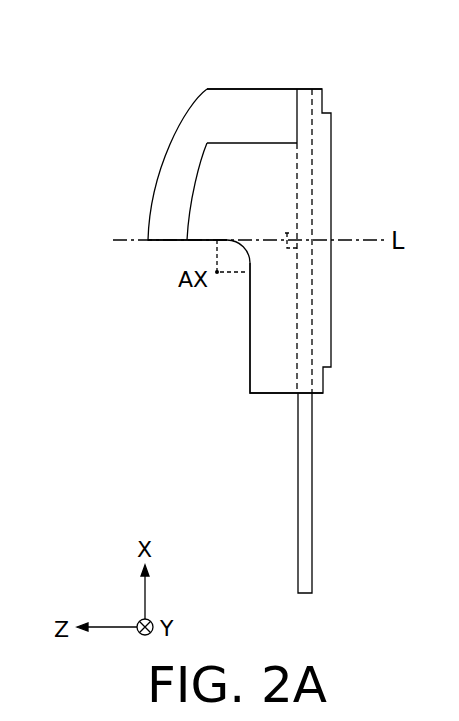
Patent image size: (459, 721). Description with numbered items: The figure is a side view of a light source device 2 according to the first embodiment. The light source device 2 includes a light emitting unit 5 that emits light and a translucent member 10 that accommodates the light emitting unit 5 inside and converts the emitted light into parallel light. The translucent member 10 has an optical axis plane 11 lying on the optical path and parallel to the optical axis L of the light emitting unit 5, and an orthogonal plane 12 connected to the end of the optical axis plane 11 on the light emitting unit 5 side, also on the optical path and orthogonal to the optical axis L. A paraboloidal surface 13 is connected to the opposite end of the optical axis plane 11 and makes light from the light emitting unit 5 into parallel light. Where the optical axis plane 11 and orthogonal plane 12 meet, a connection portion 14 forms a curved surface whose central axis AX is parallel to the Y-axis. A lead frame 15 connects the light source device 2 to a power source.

The light source device 2 is at (257, 70).
The translucent member 10 is at (278, 88).
The paraboloidal surface 13 is at (177, 157).
The optical axis plane 11 is at (200, 241).
The connection portion 14 is at (247, 263).
The orthogonal plane 12 is at (250, 345).
The light emitting unit 5 is at (290, 233).
The lead frame 15 is at (298, 515).